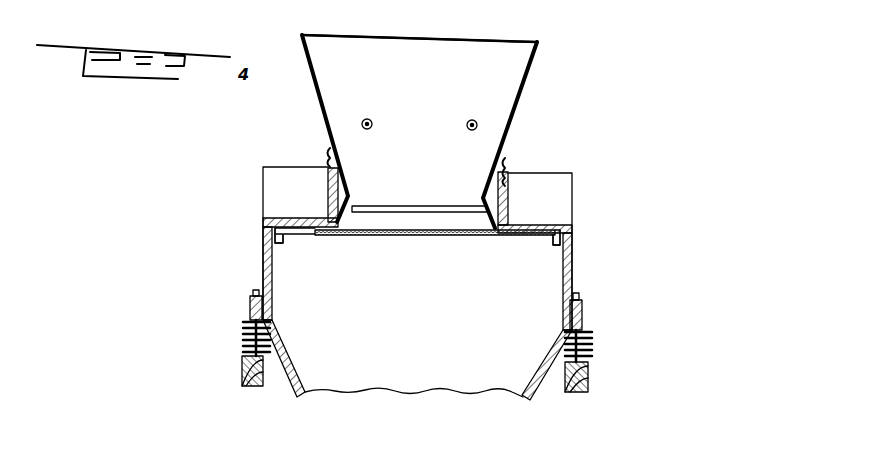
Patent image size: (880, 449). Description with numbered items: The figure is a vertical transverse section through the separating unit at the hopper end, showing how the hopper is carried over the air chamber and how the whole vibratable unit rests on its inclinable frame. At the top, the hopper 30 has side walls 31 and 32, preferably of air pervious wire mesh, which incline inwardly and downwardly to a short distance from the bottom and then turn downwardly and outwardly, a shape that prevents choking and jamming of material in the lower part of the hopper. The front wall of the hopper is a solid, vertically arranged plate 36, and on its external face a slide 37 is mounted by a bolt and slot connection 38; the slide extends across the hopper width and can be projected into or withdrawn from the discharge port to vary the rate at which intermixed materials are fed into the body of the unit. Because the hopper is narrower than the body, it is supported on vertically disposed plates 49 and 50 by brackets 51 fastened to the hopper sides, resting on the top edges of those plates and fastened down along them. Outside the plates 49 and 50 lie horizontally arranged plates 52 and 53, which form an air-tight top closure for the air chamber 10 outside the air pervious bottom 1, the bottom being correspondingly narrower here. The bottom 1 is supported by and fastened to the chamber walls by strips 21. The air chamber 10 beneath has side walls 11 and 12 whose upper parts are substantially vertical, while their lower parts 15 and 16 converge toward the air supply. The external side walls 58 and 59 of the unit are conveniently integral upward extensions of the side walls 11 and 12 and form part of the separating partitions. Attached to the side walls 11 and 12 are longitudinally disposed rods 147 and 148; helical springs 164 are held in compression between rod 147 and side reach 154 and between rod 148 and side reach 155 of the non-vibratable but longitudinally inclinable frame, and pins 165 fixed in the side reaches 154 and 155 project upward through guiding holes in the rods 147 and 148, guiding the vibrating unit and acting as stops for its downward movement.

The air pervious bottom 1 is at (392, 238).
The air chamber 10 is at (425, 342).
The side wall of air chamber 11 is at (572, 266).
The side wall of air chamber 12 is at (262, 256).
The lower part of side wall 15 is at (540, 371).
The lower part of side wall 16 is at (290, 364).
The strips 21 is at (290, 239).
The hopper 30 is at (517, 41).
The hopper side wall 31 is at (320, 97).
The hopper side wall 32 is at (523, 98).
The front wall plate 36 is at (418, 58).
The slide 37 is at (428, 214).
The bolt and slot connection 38 is at (466, 125).
The vertically disposed plate 49 is at (330, 195).
The vertically disposed plate 50 is at (508, 206).
The brackets 51 is at (328, 150).
The horizontal plate 52 is at (296, 218).
The horizontal plate 53 is at (542, 225).
The external side wall 58 is at (562, 225).
The external side wall 59 is at (272, 218).
The rod 147 is at (583, 312).
The rod 148 is at (250, 306).
The side reach 154 is at (588, 380).
The side reach 155 is at (242, 371).
The helical springs 164 is at (245, 330).
The pins 165 is at (243, 346).